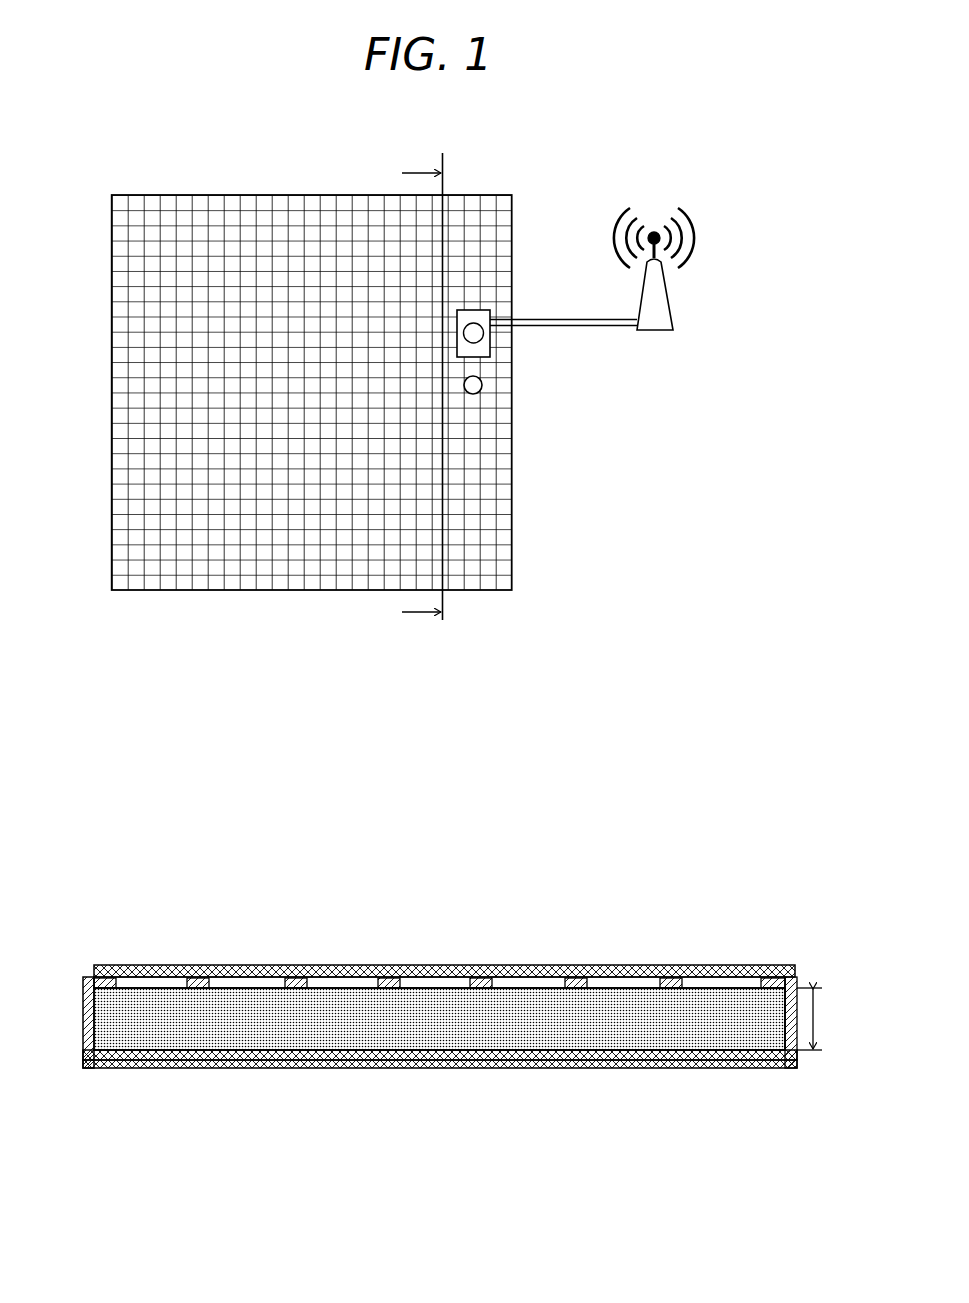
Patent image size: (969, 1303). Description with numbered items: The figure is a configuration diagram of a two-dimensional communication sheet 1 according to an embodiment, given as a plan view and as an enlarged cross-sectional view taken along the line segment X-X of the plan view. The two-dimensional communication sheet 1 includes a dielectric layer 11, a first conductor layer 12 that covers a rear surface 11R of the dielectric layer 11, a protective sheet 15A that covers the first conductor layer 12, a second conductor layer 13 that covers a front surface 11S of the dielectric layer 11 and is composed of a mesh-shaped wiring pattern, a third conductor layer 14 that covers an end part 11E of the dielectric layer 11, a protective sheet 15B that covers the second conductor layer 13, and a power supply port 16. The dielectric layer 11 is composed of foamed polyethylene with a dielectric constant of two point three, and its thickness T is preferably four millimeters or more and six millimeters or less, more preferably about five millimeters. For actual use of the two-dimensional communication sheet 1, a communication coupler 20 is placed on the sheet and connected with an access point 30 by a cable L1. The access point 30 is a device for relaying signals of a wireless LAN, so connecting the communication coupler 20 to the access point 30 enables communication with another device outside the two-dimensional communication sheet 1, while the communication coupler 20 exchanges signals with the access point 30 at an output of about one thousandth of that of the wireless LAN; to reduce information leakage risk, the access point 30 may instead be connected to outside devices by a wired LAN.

The two-dimensional communication sheet 1 is at (161, 193).
The second conductor layer 13 is at (497, 295).
The third conductor layer 14 is at (512, 237).
The communication coupler 20 is at (490, 347).
The power supply port 16 is at (483, 385).
The cable L1 is at (575, 330).
The access point 30 is at (673, 311).
The dielectric layer 11 is at (100, 1018).
The protective sheet 15B is at (94, 967).
The first conductor layer 12 is at (94, 1055).
The protective sheet 15A is at (94, 1067).
The front surface 11S is at (453, 985).
The rear surface 11R is at (458, 1068).
The end part 11E is at (797, 985).
The thickness T is at (813, 1019).